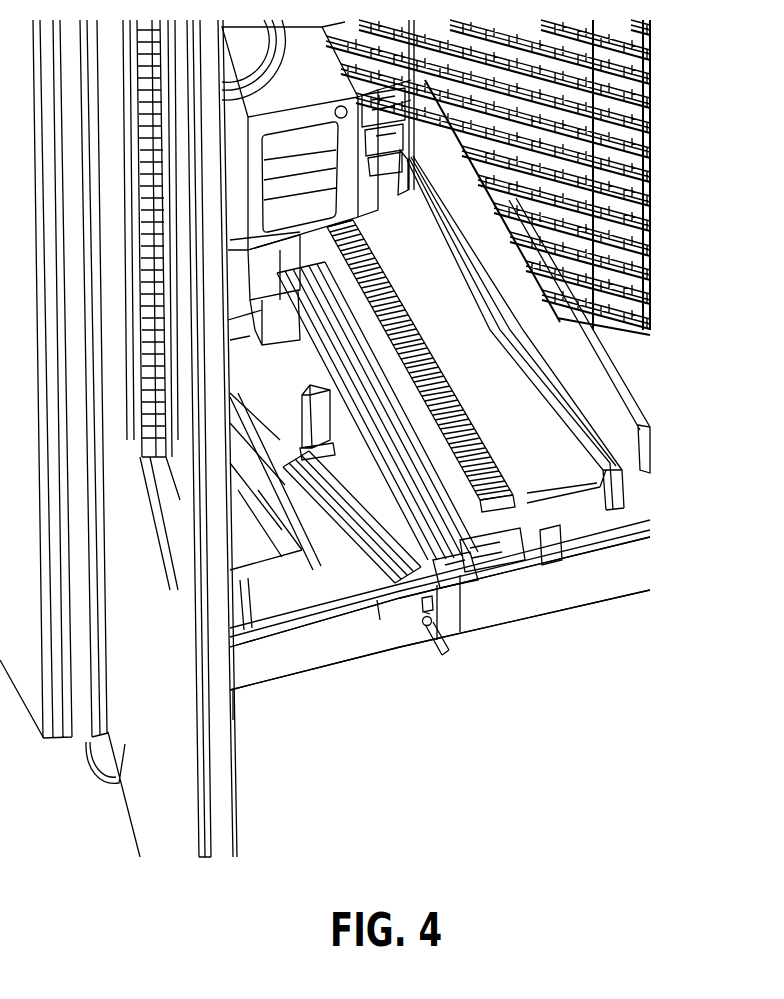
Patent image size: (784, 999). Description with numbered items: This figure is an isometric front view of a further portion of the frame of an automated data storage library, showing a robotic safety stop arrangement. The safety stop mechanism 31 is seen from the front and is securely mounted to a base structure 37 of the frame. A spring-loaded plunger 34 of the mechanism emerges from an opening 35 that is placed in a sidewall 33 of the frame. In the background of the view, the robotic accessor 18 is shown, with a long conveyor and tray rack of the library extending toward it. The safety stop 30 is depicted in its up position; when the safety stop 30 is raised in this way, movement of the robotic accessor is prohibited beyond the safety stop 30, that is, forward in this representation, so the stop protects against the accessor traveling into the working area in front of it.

The robotic accessor 18 is at (432, 152).
The safety stop 30 is at (333, 412).
The safety stop mechanism 31 is at (325, 542).
The sidewall 33 is at (323, 668).
The spring-loaded plunger 34 is at (456, 648).
The opening 35 is at (425, 631).
The base structure 37 is at (437, 570).